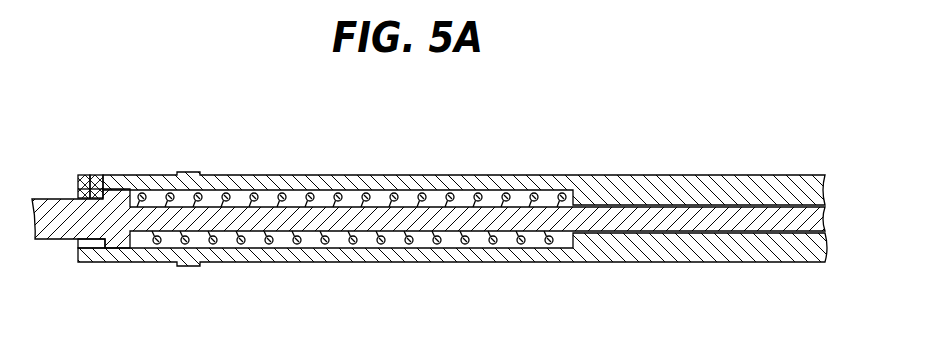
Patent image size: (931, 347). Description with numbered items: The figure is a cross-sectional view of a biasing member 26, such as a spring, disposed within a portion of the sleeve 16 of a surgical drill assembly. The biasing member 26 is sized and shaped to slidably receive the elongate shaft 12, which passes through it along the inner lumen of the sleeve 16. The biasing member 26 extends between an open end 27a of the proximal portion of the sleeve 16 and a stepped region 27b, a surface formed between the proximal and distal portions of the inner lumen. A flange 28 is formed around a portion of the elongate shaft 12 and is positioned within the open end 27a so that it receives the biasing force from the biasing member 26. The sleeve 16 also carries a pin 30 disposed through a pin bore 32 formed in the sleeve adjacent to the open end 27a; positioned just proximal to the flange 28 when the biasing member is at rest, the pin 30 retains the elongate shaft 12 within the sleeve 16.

The elongate shaft 12 is at (57, 199).
The sleeve 16 is at (673, 175).
The biasing member 26 is at (330, 195).
The open end 27a is at (77, 255).
The stepped region 27b is at (572, 238).
The flange 28 is at (98, 249).
The pin 30 is at (98, 175).
The pin bore 32 is at (96, 186).